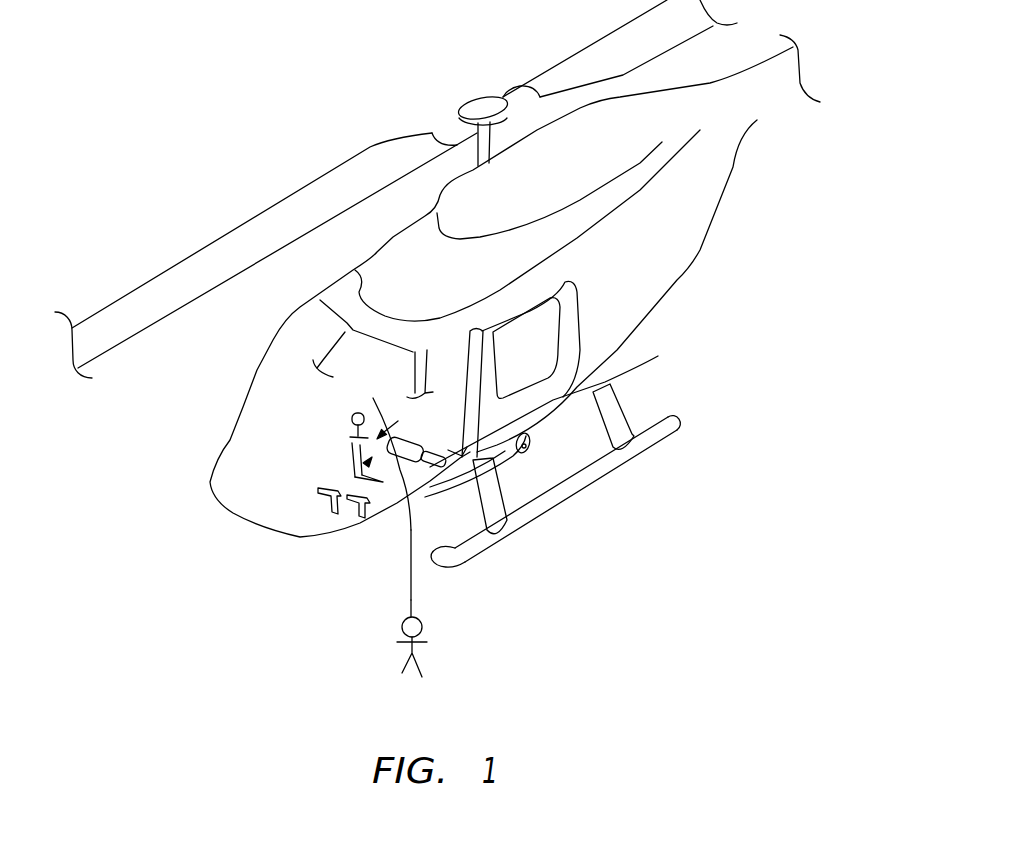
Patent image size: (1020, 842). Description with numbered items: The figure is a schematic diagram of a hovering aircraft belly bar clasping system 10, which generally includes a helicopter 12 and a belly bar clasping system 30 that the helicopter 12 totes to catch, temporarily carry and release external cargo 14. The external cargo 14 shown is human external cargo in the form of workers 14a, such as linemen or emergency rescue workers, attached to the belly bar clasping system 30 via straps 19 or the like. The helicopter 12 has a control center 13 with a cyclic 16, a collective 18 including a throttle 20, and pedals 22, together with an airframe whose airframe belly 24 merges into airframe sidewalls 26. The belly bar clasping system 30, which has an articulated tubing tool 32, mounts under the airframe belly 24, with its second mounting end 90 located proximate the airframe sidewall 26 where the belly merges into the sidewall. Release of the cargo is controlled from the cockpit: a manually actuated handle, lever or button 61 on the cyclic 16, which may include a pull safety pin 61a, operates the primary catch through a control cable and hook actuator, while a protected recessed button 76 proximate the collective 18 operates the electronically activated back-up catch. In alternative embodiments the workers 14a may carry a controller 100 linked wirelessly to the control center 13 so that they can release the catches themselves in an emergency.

The hovering aircraft belly bar clasping system 10 is at (619, 484).
The helicopter 12 is at (257, 370).
The control center 13 is at (323, 468).
The external cargo 14 is at (451, 635).
The human external cargo workers 14a is at (461, 667).
The cyclic 16 is at (352, 421).
The collective 18 is at (505, 495).
The straps 19 is at (428, 575).
The throttle 20 is at (393, 459).
The pedals 22 is at (322, 491).
The airframe belly 24 is at (448, 522).
The airframe sidewalls 26 is at (658, 356).
The belly bar clasping system 30 is at (537, 452).
The articulated tubing tool 32 is at (423, 519).
The manually actuated handle, lever or button 61 is at (377, 410).
The pull safety pin 61a is at (367, 463).
The protected (recessed) button 76 is at (398, 443).
The second mounting end 90 is at (430, 483).
The controller 100 is at (410, 655).